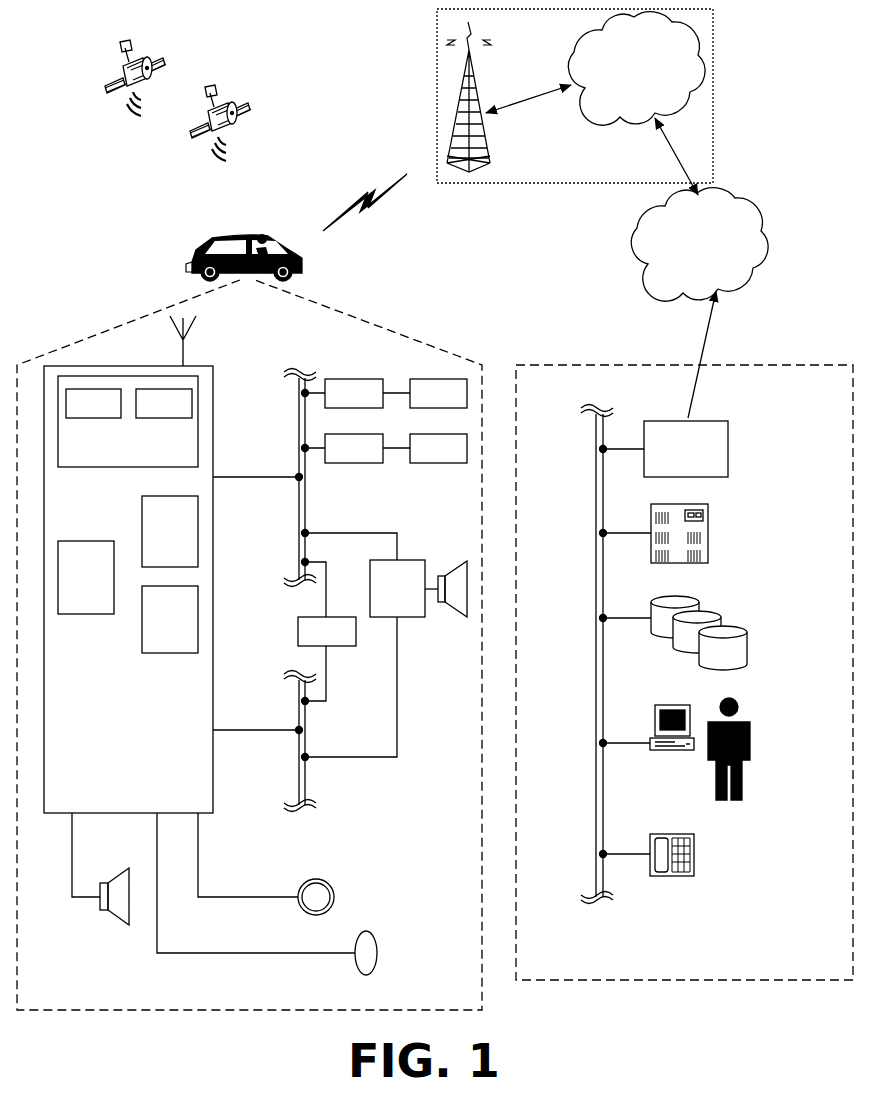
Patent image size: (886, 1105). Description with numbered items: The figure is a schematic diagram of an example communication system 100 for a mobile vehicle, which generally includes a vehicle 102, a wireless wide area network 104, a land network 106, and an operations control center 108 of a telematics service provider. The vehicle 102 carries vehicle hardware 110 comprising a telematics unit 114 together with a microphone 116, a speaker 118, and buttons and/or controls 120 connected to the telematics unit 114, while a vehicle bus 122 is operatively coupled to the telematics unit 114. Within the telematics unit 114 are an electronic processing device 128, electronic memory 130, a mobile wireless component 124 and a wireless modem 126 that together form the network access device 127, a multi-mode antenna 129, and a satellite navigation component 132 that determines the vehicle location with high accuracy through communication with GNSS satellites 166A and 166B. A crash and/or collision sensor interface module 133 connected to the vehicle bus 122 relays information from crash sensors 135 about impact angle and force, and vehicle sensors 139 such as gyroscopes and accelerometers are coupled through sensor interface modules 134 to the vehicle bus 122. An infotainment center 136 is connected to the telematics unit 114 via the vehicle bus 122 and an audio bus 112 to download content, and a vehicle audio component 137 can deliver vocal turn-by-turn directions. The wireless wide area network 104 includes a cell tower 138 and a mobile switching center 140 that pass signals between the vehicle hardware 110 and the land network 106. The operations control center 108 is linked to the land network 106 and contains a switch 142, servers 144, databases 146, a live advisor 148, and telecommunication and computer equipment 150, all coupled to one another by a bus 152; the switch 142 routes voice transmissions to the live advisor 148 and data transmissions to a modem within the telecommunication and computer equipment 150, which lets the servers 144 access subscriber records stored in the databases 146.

The communication system 100 is at (401, 39).
The vehicle 102 is at (197, 250).
The wireless wide area network 104 is at (716, 65).
The land network 106 is at (699, 244).
The operations control center 108 is at (685, 981).
The vehicle hardware 110 is at (217, 1010).
The audio bus 112 is at (297, 778).
The telematics unit 114 is at (213, 673).
The microphone 116 is at (369, 931).
The speaker 118 is at (113, 918).
The buttons and/or controls 120 is at (313, 879).
The vehicle bus 122 is at (308, 521).
The mobile wireless component 124 is at (93, 403).
The wireless modem 126 is at (164, 403).
The network access device 127 is at (112, 476).
The electronic processing device 128 is at (86, 577).
The multi-mode antenna 129 is at (186, 358).
The electronic memory 130 is at (170, 531).
The satellite navigation component 132 is at (170, 619).
The crash and/or collision sensor interface module 133 is at (354, 393).
The sensor interface modules 134 is at (354, 448).
The crash sensors 135 is at (438, 393).
The infotainment center 136 is at (327, 631).
The vehicle audio component 137 is at (418, 588).
The cell tower 138 is at (478, 75).
The vehicle sensors 139 is at (438, 448).
The mobile switching center 140 is at (636, 68).
The switch 142 is at (686, 449).
The servers 144 is at (708, 509).
The databases 146 is at (718, 616).
The live advisor 148 is at (750, 721).
The telecommunication and computer equipment 150 is at (700, 847).
The bus 152 is at (597, 669).
The GNSS satellite 166A is at (103, 82).
The GNSS satellite 166B is at (188, 128).